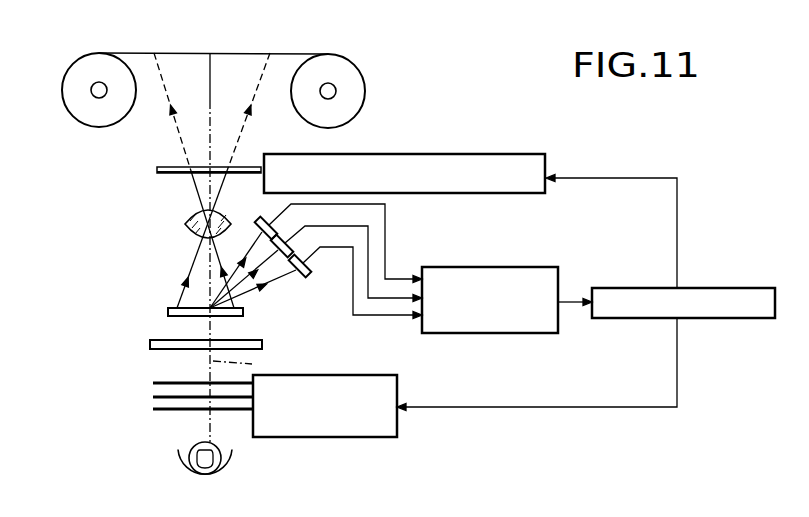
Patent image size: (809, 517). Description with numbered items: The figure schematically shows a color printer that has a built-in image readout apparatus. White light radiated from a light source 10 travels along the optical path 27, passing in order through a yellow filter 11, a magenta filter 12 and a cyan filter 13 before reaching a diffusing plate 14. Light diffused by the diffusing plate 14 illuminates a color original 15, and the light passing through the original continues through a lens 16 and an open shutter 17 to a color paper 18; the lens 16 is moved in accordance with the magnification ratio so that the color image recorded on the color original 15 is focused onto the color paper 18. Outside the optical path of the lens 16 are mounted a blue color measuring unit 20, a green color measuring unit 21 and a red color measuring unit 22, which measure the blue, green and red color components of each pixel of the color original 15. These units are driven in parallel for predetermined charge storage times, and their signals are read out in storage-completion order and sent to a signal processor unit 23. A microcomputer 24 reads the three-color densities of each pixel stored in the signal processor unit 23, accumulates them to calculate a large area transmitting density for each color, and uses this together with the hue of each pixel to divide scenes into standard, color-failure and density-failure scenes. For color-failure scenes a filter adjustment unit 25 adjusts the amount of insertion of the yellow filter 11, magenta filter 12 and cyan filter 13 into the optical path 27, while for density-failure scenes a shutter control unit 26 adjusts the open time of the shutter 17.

The light source 10 is at (188, 471).
The yellow filter 11 is at (172, 410).
The magenta filter 12 is at (158, 396).
The cyan filter 13 is at (170, 382).
The diffusing plate 14 is at (158, 340).
The color original 15 is at (172, 307).
The lens 16 is at (186, 226).
The shutter 17 is at (166, 166).
The color paper 18 is at (246, 52).
The blue color measuring unit 20 is at (260, 216).
The green color measuring unit 21 is at (287, 238).
The red color measuring unit 22 is at (300, 276).
The signal processor unit 23 is at (487, 266).
The microcomputer 24 is at (716, 288).
The filter adjustment unit 25 is at (318, 436).
The shutter control unit 26 is at (402, 153).
The optical path 27 is at (245, 365).